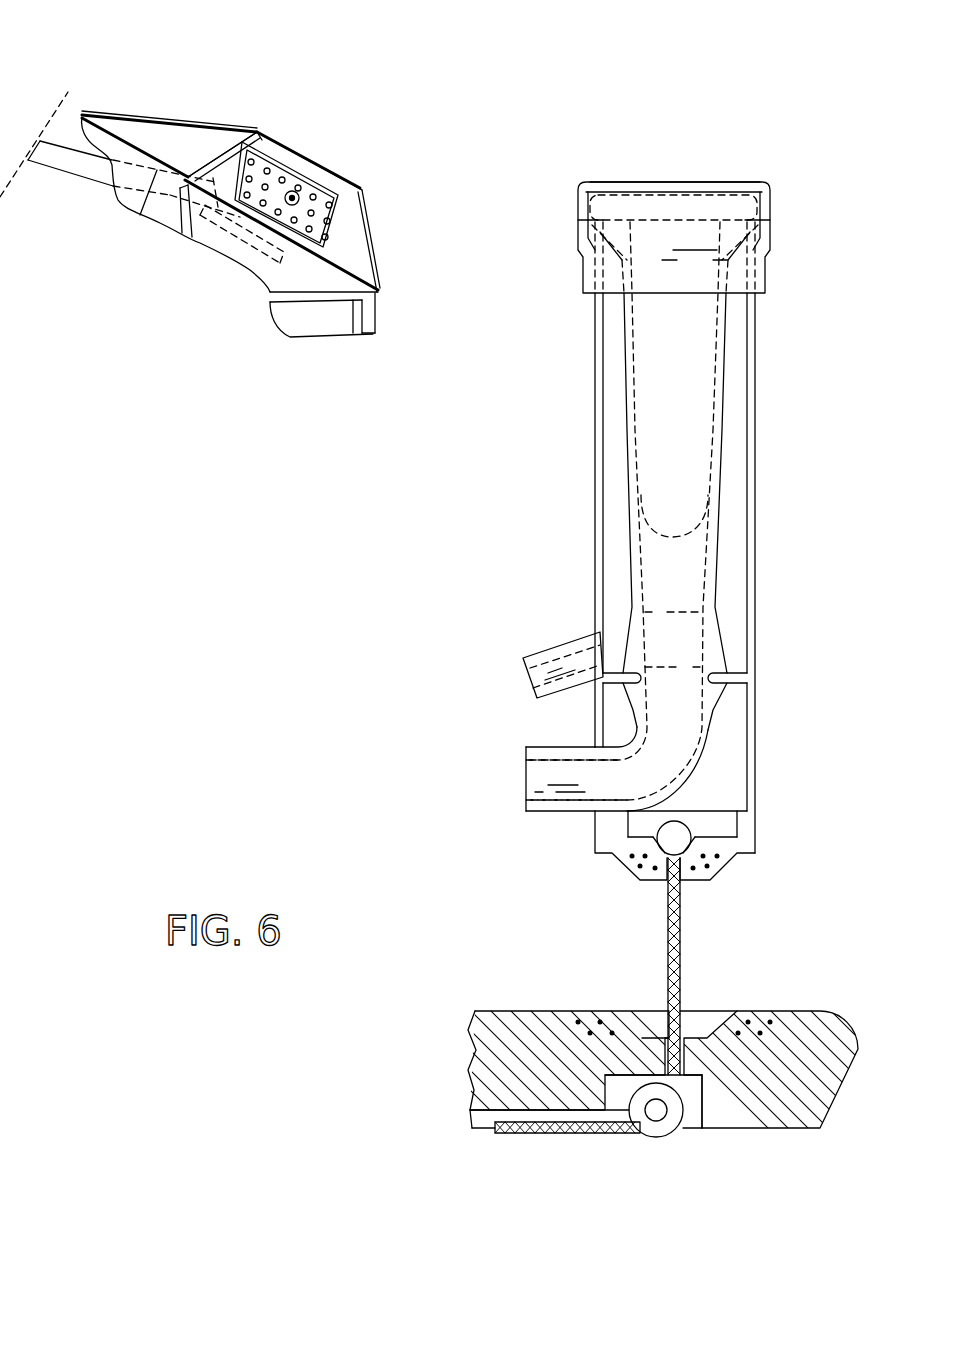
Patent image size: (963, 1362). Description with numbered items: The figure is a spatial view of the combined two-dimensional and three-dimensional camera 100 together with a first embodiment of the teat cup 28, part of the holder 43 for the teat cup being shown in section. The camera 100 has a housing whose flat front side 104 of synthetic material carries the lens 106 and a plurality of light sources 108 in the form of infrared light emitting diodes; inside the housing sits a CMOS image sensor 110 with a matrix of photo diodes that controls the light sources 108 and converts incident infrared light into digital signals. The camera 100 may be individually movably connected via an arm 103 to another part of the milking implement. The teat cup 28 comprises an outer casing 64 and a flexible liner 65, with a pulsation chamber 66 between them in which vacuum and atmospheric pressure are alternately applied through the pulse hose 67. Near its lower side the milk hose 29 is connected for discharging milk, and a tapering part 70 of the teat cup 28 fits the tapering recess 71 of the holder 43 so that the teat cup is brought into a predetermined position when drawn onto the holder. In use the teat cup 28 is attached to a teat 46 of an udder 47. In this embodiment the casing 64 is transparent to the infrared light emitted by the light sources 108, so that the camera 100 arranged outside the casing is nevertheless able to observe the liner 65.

The 2D/3D camera 100 is at (258, 108).
The arm 103 is at (90, 163).
The front side 104 is at (310, 235).
The lens 106 is at (298, 183).
The light sources 108 is at (265, 165).
The CMOS image sensor 110 is at (218, 172).
The teat cup 28 is at (498, 500).
The milk hose 29 is at (548, 806).
The holder 43 is at (742, 1110).
The teat 46 is at (713, 175).
The udder 47 is at (758, 142).
The outer casing 64 is at (599, 415).
The flexible liner 65 is at (637, 535).
The pulsation chamber 66 is at (618, 587).
The pulse hose 67 is at (540, 657).
The tapering part 70 is at (637, 863).
The tapering recess 71 is at (707, 1022).